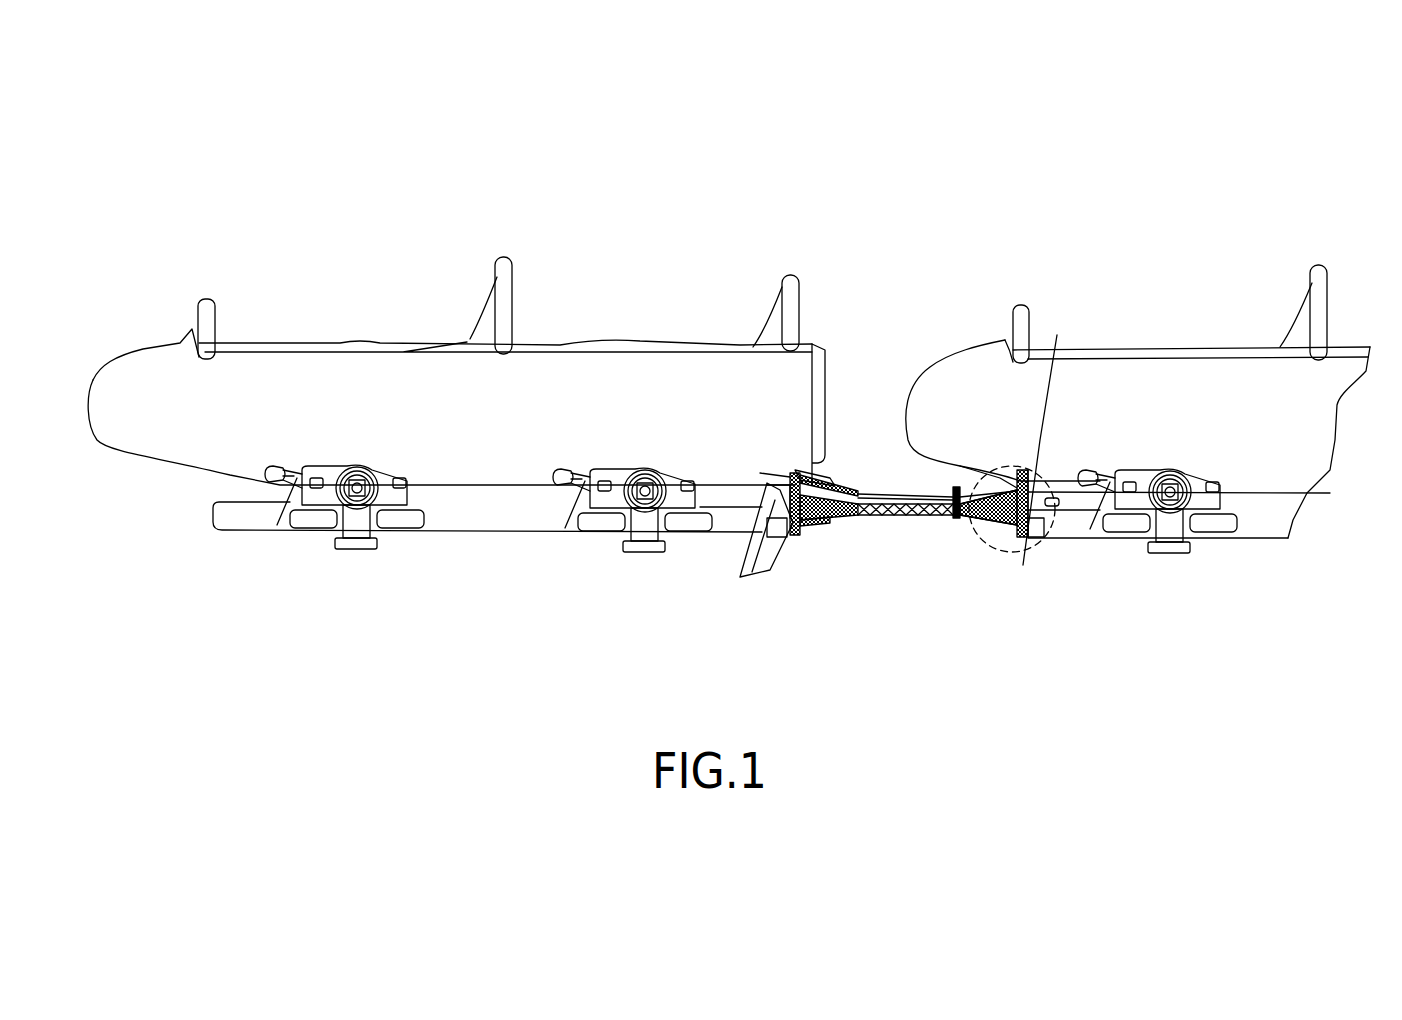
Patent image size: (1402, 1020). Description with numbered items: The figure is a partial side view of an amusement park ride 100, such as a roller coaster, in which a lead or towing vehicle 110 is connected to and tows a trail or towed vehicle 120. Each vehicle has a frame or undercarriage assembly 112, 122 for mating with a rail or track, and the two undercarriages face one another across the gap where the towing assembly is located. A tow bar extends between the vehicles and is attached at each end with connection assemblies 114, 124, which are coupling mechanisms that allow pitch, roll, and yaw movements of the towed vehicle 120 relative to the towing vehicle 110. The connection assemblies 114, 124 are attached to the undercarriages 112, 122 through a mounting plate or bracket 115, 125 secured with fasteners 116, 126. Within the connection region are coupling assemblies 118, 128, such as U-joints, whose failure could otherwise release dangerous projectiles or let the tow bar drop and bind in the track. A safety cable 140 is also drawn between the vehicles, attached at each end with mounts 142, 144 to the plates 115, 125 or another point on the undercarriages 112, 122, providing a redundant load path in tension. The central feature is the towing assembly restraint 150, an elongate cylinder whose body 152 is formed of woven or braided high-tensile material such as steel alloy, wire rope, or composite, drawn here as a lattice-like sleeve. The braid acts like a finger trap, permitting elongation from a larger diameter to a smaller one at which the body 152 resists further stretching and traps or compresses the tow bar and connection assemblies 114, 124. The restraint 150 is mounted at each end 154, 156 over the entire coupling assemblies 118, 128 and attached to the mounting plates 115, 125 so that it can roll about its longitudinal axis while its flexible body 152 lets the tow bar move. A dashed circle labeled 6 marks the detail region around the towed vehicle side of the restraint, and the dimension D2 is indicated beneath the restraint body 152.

The amusement park ride 100 is at (296, 189).
The towing vehicle 110 is at (143, 349).
The undercarriage assembly 112 is at (207, 503).
The connection assembly 114 is at (812, 538).
The mounting plate 115 is at (795, 532).
The fasteners 116 is at (746, 572).
The coupling assembly 118 is at (828, 524).
The towed vehicle 120 is at (993, 337).
The undercarriage assembly 122 is at (1251, 543).
The connection assembly 124 is at (1012, 524).
The mounting plate 125 is at (1036, 548).
The fasteners 126 is at (1047, 537).
The coupling assembly 128 is at (984, 523).
The safety cable 140 is at (848, 492).
The mount 142 is at (795, 473).
The mount 144 is at (995, 470).
The towing assembly restraint 150 is at (940, 523).
The body 152 is at (906, 522).
The end of restraint 154 is at (1050, 436).
The end of restraint 156 is at (760, 473).
The detail region of FIG. 6 is at (1014, 462).
The distance D2 is at (883, 521).